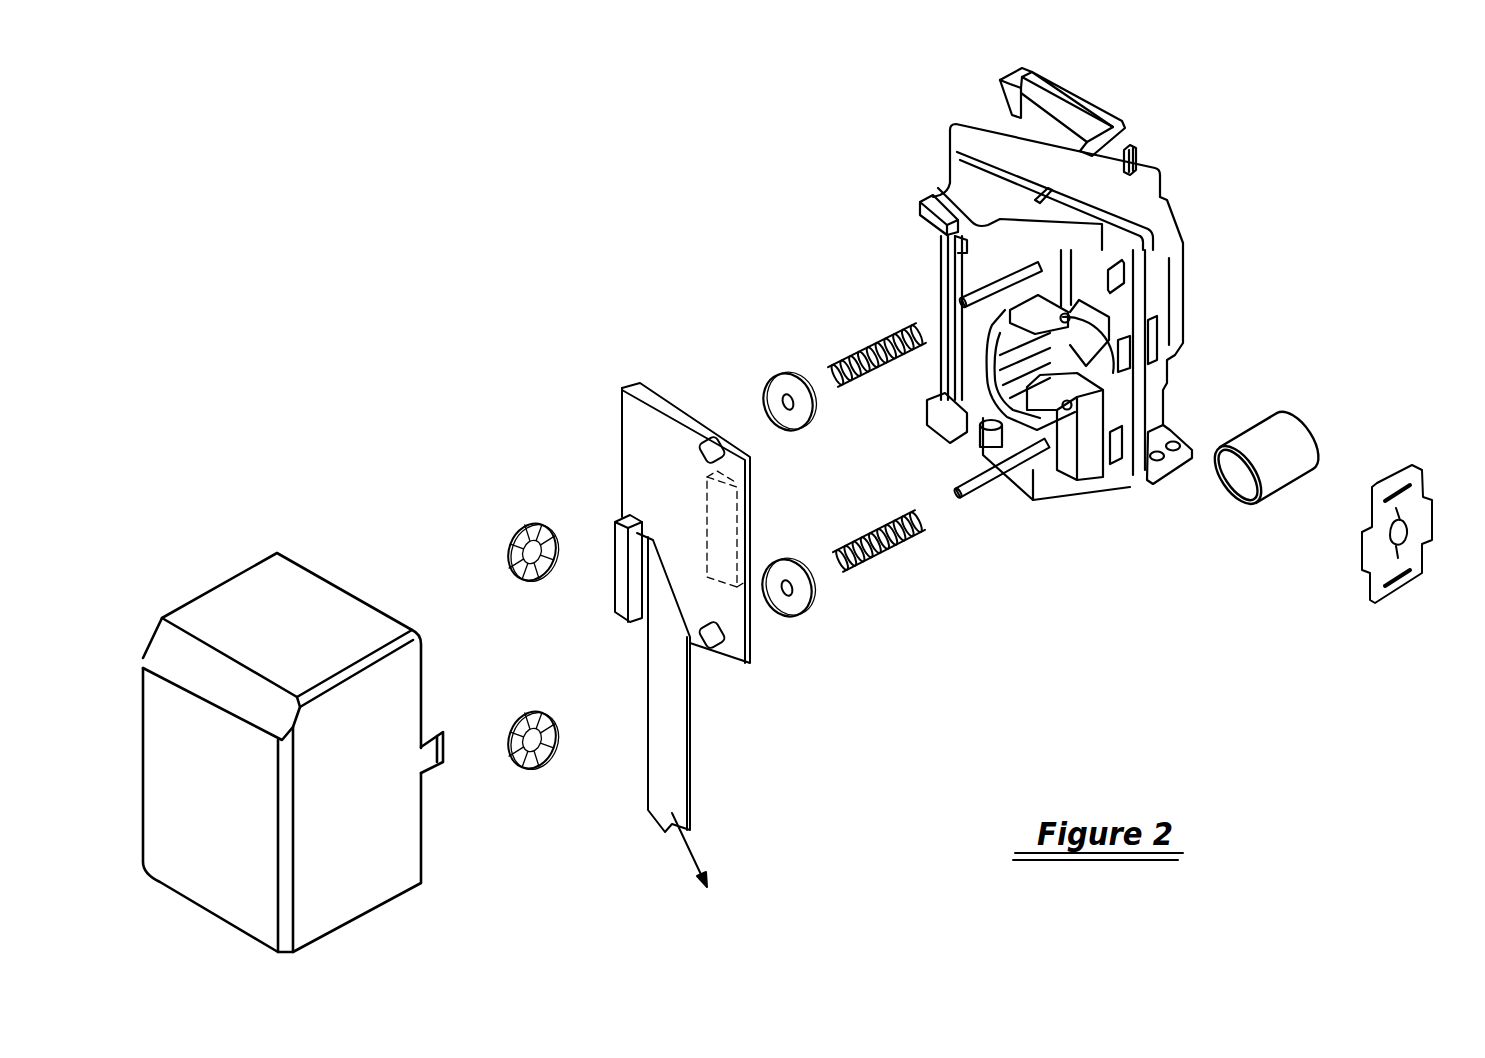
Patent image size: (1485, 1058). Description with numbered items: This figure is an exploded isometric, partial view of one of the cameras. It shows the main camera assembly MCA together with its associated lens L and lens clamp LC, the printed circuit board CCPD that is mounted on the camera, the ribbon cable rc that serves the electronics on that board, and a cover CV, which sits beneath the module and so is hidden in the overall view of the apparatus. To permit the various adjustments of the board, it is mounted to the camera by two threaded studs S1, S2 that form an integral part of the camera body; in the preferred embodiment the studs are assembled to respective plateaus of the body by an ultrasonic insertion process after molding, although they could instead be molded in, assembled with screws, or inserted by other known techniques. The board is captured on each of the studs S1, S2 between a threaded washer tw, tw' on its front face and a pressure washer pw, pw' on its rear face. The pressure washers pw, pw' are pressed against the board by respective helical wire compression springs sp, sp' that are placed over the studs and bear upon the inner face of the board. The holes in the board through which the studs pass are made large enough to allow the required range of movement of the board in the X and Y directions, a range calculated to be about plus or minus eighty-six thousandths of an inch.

The cover CV is at (383, 903).
The threaded washer tw is at (503, 526).
The threaded washer tw' is at (543, 772).
The charge coupled photodetector board CCPD is at (707, 477).
The ribbon cable rc is at (692, 765).
The pressure washer pw is at (753, 368).
The pressure washer pw' is at (826, 596).
The helical wire compression spring sp is at (847, 326).
The helical wire compression spring sp' is at (910, 546).
The mount/camera assembly MCA is at (1163, 195).
The threaded stud S1 is at (960, 273).
The threaded stud S2 is at (1012, 488).
The lens L is at (1300, 415).
The lens cap LC is at (1423, 482).